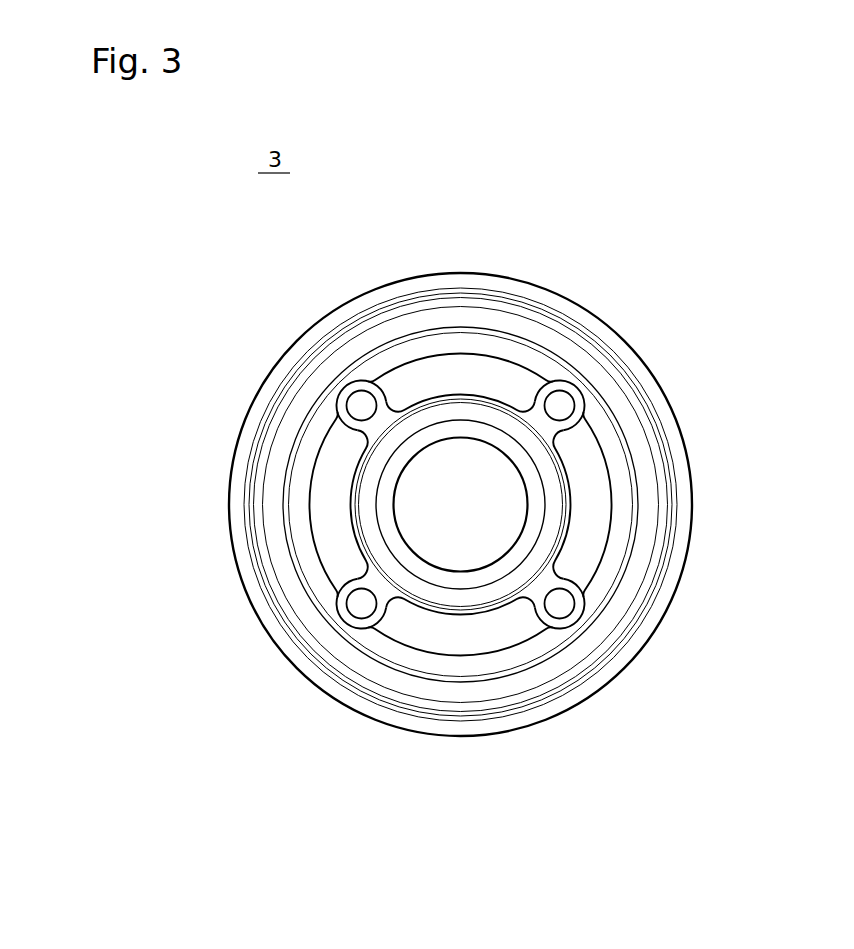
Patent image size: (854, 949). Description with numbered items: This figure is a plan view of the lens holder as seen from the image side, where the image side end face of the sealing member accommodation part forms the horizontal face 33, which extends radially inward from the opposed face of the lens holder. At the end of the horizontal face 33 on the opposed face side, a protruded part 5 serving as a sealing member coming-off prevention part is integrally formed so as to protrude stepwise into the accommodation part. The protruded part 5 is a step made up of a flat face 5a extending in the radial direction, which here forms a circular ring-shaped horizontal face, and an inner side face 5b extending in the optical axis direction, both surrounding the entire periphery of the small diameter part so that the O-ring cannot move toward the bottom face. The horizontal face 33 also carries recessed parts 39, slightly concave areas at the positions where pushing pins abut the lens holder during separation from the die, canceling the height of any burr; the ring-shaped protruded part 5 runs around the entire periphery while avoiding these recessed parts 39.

The protruded part 5 is at (612, 560).
The flat face 5a is at (608, 438).
The inner side face 5b is at (609, 506).
The horizontal face 33 is at (415, 630).
The recessed parts 39 is at (363, 403).